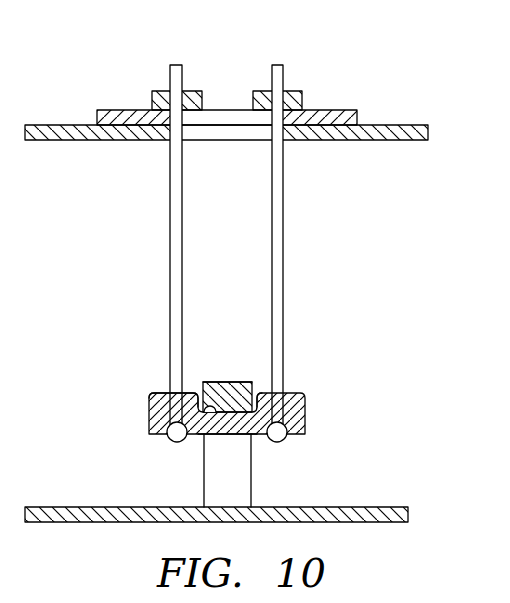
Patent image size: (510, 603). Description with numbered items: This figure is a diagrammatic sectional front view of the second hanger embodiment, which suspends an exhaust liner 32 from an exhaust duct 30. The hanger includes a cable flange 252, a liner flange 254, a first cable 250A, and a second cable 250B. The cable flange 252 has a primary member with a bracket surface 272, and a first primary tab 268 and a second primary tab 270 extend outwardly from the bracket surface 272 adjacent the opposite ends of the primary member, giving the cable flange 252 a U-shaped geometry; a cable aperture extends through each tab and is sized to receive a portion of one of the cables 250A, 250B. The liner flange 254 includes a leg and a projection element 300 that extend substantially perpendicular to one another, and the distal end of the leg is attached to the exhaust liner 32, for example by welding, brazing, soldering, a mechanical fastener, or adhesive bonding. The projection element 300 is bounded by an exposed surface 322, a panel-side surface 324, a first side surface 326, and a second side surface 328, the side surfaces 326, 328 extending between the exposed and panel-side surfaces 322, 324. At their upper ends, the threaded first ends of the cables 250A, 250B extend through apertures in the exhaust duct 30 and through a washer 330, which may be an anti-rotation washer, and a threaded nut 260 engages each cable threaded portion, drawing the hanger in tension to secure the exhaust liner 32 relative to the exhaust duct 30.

The exhaust duct 30 is at (412, 125).
The exhaust liner 32 is at (398, 507).
The first cable 250A is at (300, 251).
The second cable 250B is at (152, 241).
The cable flange 252 is at (142, 445).
The liner flange 254 is at (226, 372).
The threaded nut 260 is at (157, 91).
The first primary tab 268 is at (305, 418).
The second primary tab 270 is at (158, 427).
The bracket surface 272 is at (190, 438).
The projection element 300 is at (218, 382).
The exposed surface 322 is at (246, 384).
The panel-side surface 324 is at (243, 434).
The first side surface 326 is at (260, 392).
The second side surface 328 is at (205, 407).
The washer 330 is at (330, 110).